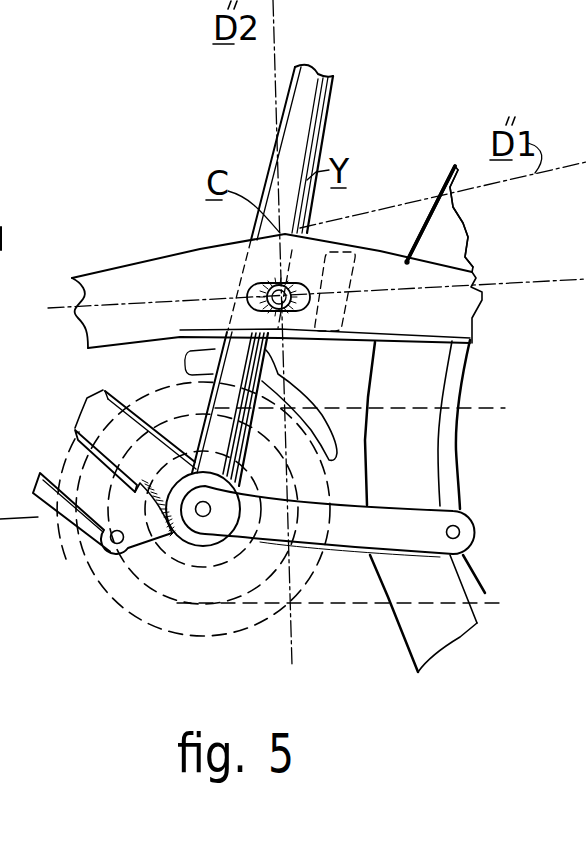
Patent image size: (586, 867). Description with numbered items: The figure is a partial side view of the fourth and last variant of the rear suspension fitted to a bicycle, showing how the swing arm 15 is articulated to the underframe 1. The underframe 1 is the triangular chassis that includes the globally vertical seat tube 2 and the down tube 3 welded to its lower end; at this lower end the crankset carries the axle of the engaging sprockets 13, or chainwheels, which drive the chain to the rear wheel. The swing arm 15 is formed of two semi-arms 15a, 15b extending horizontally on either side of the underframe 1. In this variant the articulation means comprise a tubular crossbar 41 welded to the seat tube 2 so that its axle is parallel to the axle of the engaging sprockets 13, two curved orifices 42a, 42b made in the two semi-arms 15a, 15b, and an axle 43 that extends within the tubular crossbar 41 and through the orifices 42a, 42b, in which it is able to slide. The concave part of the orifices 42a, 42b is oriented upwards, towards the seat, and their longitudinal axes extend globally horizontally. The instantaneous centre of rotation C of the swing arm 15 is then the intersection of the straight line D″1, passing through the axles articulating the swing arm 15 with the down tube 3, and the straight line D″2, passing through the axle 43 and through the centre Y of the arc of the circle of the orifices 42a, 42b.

The underframe 1 is at (245, 144).
The seat tube 2 is at (333, 107).
The down tube 3 is at (74, 455).
The engaging sprockets 13 is at (124, 618).
The swing arm 15 is at (370, 243).
The semi-arm 15a is at (436, 268).
The semi-arm 15b is at (574, 234).
The tubular crossbar 41 is at (272, 290).
The curved orifice 42a is at (310, 333).
The curved orifice 42b is at (574, 454).
The axle 43 is at (252, 286).